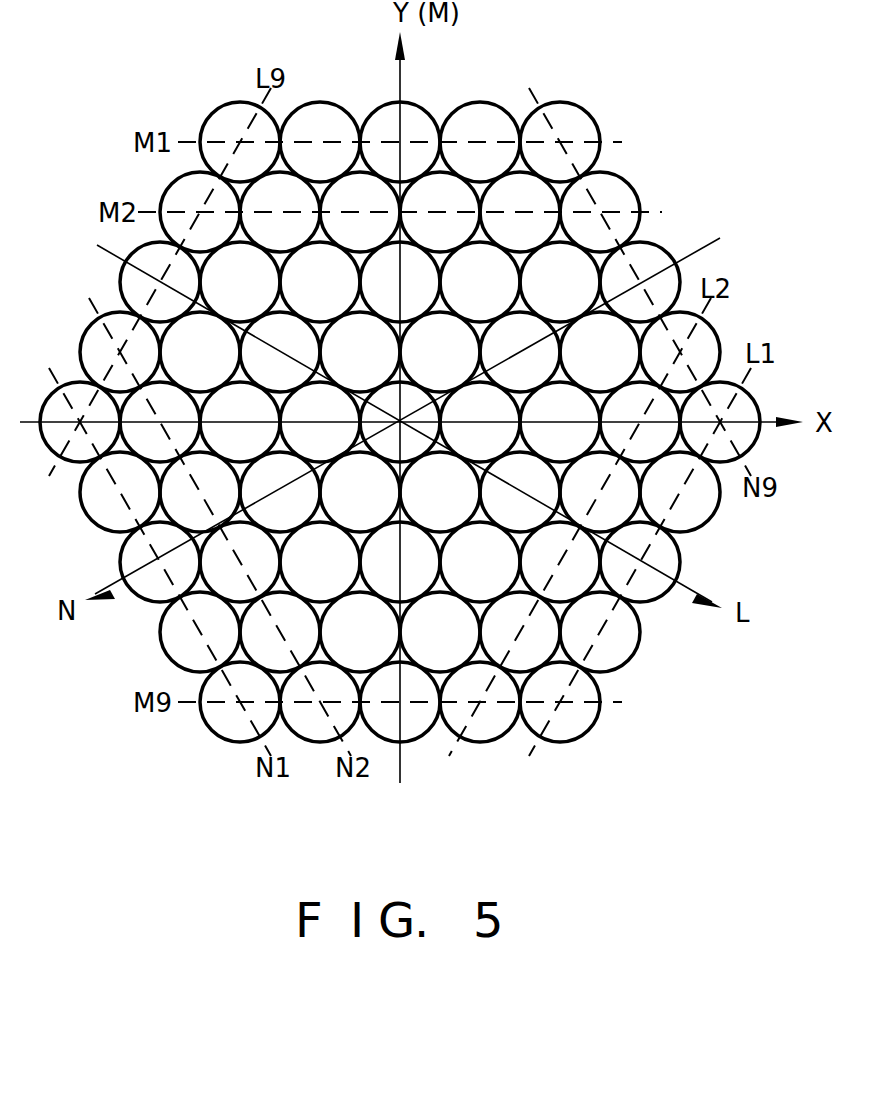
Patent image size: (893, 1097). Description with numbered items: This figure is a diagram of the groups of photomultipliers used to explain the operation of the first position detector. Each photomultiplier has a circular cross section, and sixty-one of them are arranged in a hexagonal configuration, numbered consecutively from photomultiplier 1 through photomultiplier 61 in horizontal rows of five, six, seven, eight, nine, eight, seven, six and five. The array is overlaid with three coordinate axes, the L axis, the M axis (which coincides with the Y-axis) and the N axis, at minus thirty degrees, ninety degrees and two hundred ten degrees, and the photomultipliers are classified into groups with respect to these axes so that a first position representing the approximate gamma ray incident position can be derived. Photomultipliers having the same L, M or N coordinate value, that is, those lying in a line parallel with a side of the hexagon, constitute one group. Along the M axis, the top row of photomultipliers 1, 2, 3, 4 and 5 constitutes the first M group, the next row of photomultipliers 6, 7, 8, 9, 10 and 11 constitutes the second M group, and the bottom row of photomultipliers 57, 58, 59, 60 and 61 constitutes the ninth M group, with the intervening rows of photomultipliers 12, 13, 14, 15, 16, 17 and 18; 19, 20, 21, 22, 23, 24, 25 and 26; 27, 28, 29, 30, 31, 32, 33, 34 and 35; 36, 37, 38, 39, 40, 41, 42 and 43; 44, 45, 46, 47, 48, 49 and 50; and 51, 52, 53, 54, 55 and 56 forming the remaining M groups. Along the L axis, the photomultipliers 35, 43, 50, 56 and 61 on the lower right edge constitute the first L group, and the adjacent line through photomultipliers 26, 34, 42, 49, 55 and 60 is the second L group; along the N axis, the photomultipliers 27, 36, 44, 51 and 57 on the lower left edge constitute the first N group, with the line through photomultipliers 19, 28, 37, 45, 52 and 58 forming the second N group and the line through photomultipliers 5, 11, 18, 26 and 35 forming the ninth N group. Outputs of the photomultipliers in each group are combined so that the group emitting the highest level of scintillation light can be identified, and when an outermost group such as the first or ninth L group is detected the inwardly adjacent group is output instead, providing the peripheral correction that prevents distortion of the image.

The photomultiplier 1 is at (240, 142).
The photomultiplier 2 is at (320, 142).
The photomultiplier 3 is at (400, 142).
The photomultiplier 4 is at (480, 142).
The photomultiplier 5 is at (560, 142).
The photomultiplier 6 is at (200, 212).
The photomultiplier 7 is at (280, 212).
The photomultiplier 8 is at (360, 212).
The photomultiplier 9 is at (440, 212).
The photomultiplier 10 is at (520, 212).
The photomultiplier 11 is at (600, 212).
The photomultiplier 12 is at (160, 282).
The photomultiplier 13 is at (240, 282).
The photomultiplier 14 is at (320, 282).
The photomultiplier 15 is at (400, 282).
The photomultiplier 16 is at (480, 282).
The photomultiplier 17 is at (560, 282).
The photomultiplier 18 is at (640, 282).
The photomultiplier 19 is at (120, 352).
The photomultiplier 20 is at (200, 352).
The photomultiplier 21 is at (280, 352).
The photomultiplier 22 is at (360, 352).
The photomultiplier 23 is at (440, 352).
The photomultiplier 24 is at (520, 352).
The photomultiplier 25 is at (600, 352).
The photomultiplier 26 is at (680, 352).
The photomultiplier 27 is at (80, 422).
The photomultiplier 28 is at (160, 422).
The photomultiplier 29 is at (240, 422).
The photomultiplier 30 is at (320, 422).
The photomultiplier 31 is at (400, 422).
The photomultiplier 32 is at (480, 422).
The photomultiplier 33 is at (560, 422).
The photomultiplier 34 is at (640, 422).
The photomultiplier 35 is at (720, 422).
The photomultiplier 36 is at (120, 492).
The photomultiplier 37 is at (200, 492).
The photomultiplier 38 is at (280, 492).
The photomultiplier 39 is at (360, 492).
The photomultiplier 40 is at (440, 492).
The photomultiplier 41 is at (520, 492).
The photomultiplier 42 is at (600, 492).
The photomultiplier 43 is at (680, 492).
The photomultiplier 44 is at (160, 562).
The photomultiplier 45 is at (240, 562).
The photomultiplier 46 is at (320, 562).
The photomultiplier 47 is at (400, 562).
The photomultiplier 48 is at (480, 562).
The photomultiplier 49 is at (560, 562).
The photomultiplier 50 is at (640, 562).
The photomultiplier 51 is at (200, 632).
The photomultiplier 52 is at (280, 632).
The photomultiplier 53 is at (360, 632).
The photomultiplier 54 is at (440, 632).
The photomultiplier 55 is at (520, 632).
The photomultiplier 56 is at (600, 632).
The photomultiplier 57 is at (240, 702).
The photomultiplier 58 is at (320, 702).
The photomultiplier 59 is at (400, 702).
The photomultiplier 60 is at (480, 702).
The photomultiplier 61 is at (560, 702).